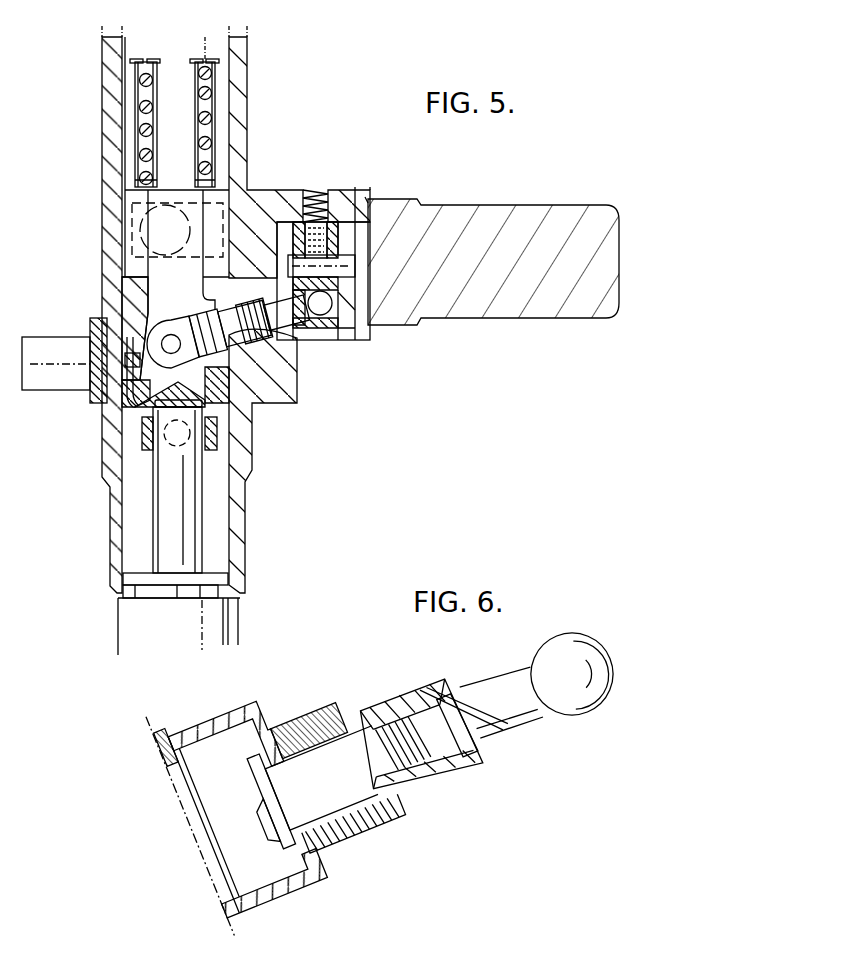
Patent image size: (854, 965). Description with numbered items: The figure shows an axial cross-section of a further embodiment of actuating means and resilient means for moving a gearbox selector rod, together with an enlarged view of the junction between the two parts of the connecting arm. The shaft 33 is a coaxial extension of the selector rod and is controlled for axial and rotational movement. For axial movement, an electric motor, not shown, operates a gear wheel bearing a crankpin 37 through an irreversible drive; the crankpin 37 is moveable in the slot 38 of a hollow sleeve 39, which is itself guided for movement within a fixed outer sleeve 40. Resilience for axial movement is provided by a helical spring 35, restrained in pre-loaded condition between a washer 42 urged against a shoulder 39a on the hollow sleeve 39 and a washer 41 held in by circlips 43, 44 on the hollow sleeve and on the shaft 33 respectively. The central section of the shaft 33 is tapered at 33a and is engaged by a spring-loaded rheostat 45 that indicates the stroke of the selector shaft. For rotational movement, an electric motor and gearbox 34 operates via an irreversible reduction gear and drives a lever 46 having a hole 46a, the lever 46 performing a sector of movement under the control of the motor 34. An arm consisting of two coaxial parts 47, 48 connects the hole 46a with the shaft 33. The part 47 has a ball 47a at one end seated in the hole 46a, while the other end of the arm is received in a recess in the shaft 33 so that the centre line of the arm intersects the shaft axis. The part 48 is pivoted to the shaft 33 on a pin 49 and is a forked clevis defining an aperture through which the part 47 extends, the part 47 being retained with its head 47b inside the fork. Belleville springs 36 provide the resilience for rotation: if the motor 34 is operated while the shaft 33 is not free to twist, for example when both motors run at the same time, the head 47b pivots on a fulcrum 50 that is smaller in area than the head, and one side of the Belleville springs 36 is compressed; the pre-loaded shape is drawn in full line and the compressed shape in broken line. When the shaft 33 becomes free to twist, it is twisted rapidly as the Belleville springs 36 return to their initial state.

In FIG. 5, the shaft 33 is at (130, 192).
In FIG. 5, the tapered section of the shaft 33a is at (140, 322).
In FIG. 5, the electric motor and gearbox 34 is at (491, 204).
In FIG. 5, the helical spring 35 is at (213, 91).
In FIG. 5, the Belleville springs 36 is at (292, 393).
In FIG. 6, the Belleville springs 36 is at (370, 828).
In FIG. 5, the crankpin 37 is at (140, 208).
In FIG. 5, the slot 38 is at (130, 266).
In FIG. 5, the hollow sleeve 39 is at (126, 52).
In FIG. 5, the shoulder 39a is at (212, 192).
In FIG. 5, the fixed outer sleeve 40 is at (102, 165).
In FIG. 5, the washer 41 is at (205, 56).
In FIG. 5, the washer 42 is at (148, 177).
In FIG. 5, the circlip 43 is at (145, 58).
In FIG. 5, the circlip 44 is at (152, 60).
In FIG. 5, the spring-loaded rheostat 45 is at (133, 398).
In FIG. 5, the lever 46 is at (343, 232).
In FIG. 5, the hole 46a is at (337, 333).
In FIG. 5, the arm part 47 is at (290, 345).
In FIG. 6, the arm part 47 is at (462, 771).
In FIG. 6, the ball 47a is at (562, 640).
In FIG. 6, the head 47b is at (262, 815).
In FIG. 5, the forked clevis arm part 48 is at (232, 398).
In FIG. 6, the forked clevis arm part 48 is at (285, 893).
In FIG. 5, the pin 49 is at (140, 412).
In FIG. 6, the fulcrum 50 is at (298, 745).